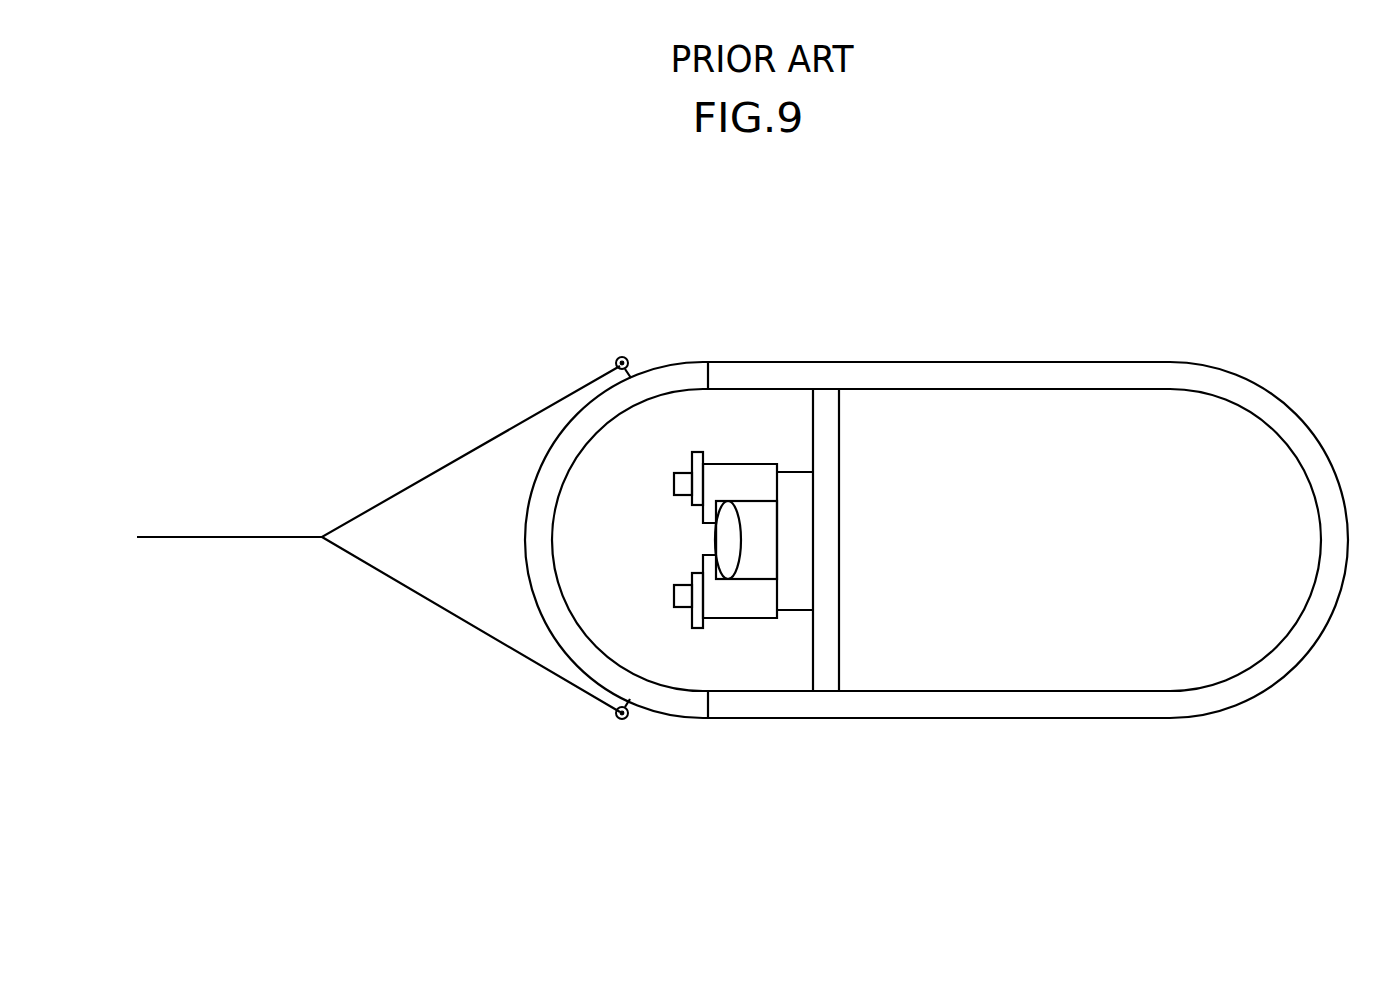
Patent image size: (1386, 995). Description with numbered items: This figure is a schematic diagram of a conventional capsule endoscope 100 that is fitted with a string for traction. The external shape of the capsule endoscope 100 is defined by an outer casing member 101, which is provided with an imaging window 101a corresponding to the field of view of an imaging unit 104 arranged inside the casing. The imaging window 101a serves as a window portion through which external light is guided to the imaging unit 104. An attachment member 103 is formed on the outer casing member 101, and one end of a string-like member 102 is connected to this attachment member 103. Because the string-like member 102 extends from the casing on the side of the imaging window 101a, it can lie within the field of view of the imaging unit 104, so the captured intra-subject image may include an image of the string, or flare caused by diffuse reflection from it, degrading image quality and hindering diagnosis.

The capsule endoscope 100 is at (936, 531).
The outer casing member 101 is at (967, 362).
The imaging window 101a is at (673, 375).
The string-like member 102 is at (450, 613).
The attachment member 103 is at (570, 763).
The imaging unit 104 is at (744, 447).